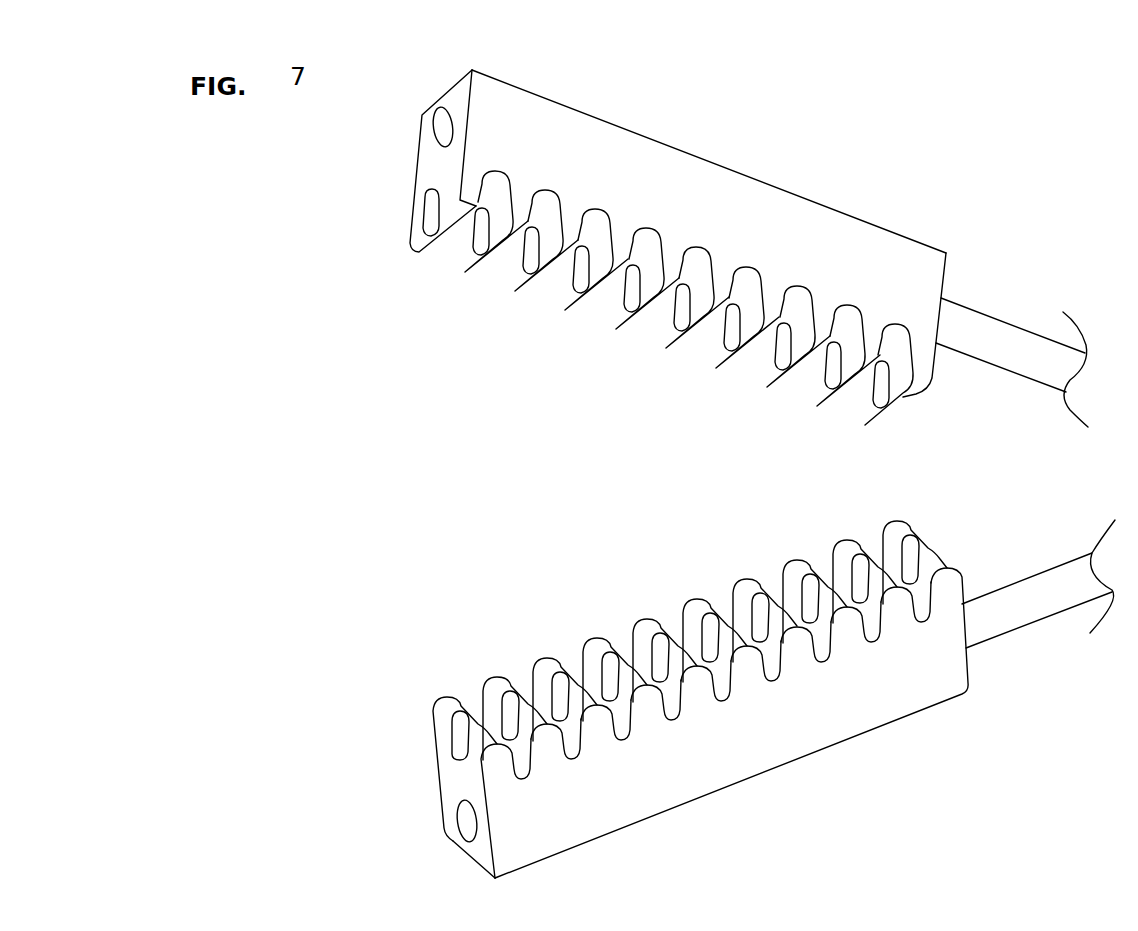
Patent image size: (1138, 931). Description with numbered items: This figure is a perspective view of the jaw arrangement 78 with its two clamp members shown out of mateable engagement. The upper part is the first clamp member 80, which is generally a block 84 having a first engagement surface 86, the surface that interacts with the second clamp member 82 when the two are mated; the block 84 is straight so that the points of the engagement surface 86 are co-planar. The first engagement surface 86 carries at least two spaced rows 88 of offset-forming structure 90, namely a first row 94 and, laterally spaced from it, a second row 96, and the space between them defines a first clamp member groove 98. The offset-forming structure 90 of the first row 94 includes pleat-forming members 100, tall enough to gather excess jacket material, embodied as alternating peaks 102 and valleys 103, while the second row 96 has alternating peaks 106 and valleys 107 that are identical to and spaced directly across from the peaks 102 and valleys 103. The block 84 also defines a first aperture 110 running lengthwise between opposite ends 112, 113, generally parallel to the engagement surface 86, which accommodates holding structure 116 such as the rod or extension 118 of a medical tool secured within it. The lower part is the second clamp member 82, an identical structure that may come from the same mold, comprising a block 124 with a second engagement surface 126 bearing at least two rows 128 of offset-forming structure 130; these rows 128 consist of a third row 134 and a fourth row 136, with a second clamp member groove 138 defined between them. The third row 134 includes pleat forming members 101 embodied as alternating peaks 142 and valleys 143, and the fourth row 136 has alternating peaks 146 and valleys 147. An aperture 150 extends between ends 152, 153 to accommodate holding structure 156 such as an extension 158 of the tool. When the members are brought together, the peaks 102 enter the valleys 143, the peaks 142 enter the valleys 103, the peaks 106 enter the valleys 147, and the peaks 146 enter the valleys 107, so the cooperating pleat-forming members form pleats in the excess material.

The jaw arrangement 78 is at (721, 248).
The first clamp member 80 is at (485, 80).
The second clamp member 82 is at (588, 837).
The block 84 is at (512, 95).
The first engagement surface 86 is at (867, 422).
The spaced rows 88 is at (415, 249).
The offset-forming structure 90 is at (463, 317).
The first row 94 is at (653, 297).
The second row 96 is at (613, 327).
The first clamp member groove 98 is at (440, 192).
The pleat-forming members 100 is at (515, 370).
The pleat forming members 101 is at (578, 561).
The peaks 102 is at (567, 240).
The valleys 103 is at (548, 190).
The peaks 106 is at (518, 288).
The valleys 107 is at (558, 263).
The first aperture 110 is at (447, 106).
The end 112 is at (418, 148).
The end 113 is at (947, 265).
The holding structure 116 is at (1078, 278).
The rod or extension 118 is at (1000, 317).
The block 124 is at (682, 797).
The second engagement surface 126 is at (900, 523).
The rows 128 is at (440, 702).
The offset-forming structure 130 is at (510, 598).
The third row 134 is at (683, 617).
The fourth row 136 is at (745, 580).
The second clamp member groove 138 is at (458, 757).
The peaks 142 is at (643, 687).
The valleys 143 is at (577, 757).
The peaks 146 is at (642, 620).
The valleys 147 is at (577, 667).
The aperture 150 is at (468, 840).
The end 152 is at (446, 812).
The end 153 is at (972, 672).
The holding structure 156 is at (1032, 543).
The extension 158 is at (1032, 625).